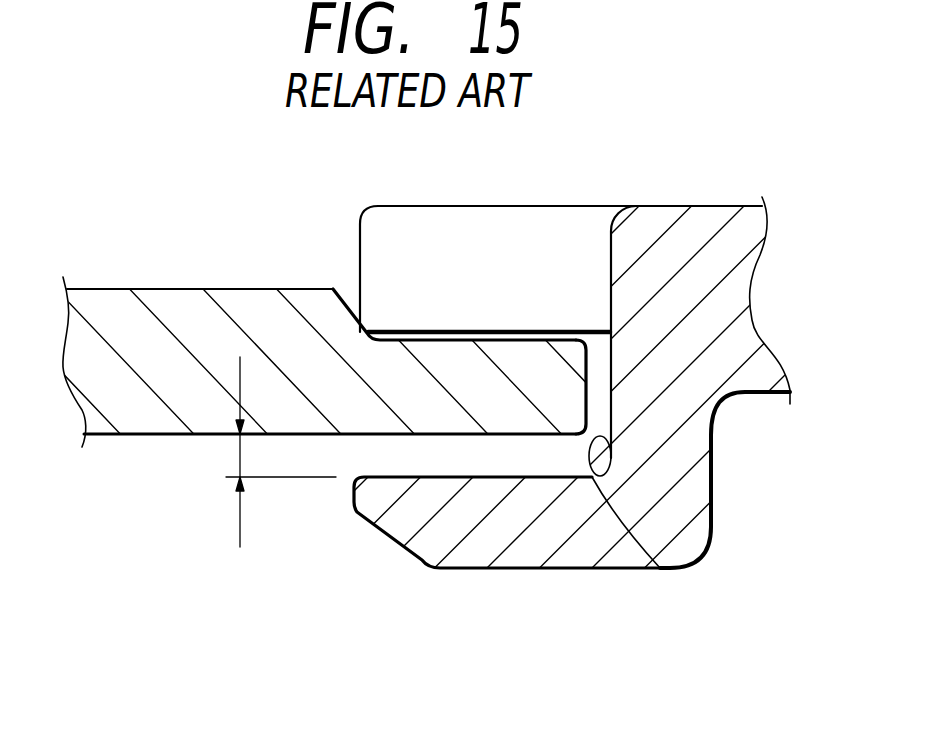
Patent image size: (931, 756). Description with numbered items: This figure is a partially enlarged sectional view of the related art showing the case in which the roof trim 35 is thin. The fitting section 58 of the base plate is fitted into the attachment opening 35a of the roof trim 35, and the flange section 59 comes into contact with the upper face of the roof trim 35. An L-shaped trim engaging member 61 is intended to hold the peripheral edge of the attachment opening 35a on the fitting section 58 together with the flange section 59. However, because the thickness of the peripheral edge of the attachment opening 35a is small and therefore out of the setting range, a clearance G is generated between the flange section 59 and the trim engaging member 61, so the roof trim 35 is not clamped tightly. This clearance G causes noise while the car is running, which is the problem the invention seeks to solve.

The roof trim 35 is at (110, 307).
The attachment opening 35a is at (578, 368).
The fitting section 58 is at (660, 567).
The flange section 59 is at (395, 267).
The trim engaging member 61 is at (438, 538).
The clearance G is at (237, 453).